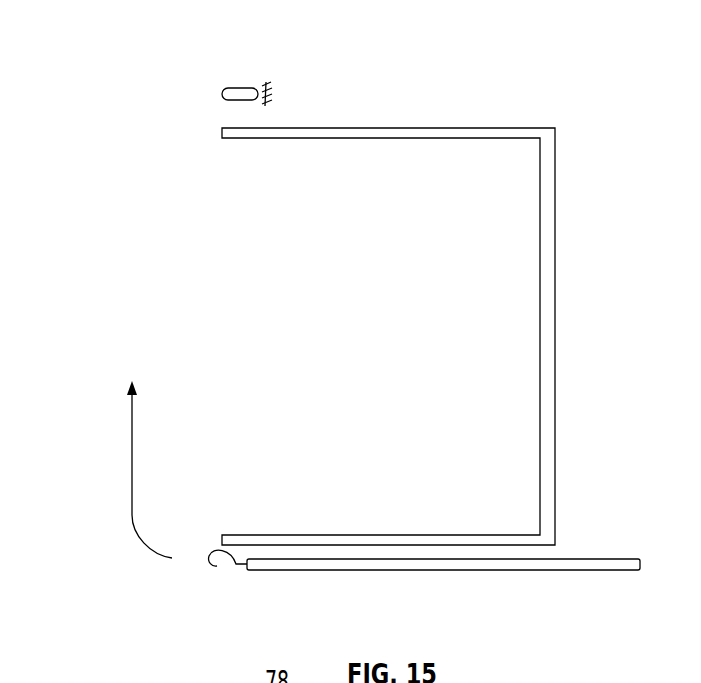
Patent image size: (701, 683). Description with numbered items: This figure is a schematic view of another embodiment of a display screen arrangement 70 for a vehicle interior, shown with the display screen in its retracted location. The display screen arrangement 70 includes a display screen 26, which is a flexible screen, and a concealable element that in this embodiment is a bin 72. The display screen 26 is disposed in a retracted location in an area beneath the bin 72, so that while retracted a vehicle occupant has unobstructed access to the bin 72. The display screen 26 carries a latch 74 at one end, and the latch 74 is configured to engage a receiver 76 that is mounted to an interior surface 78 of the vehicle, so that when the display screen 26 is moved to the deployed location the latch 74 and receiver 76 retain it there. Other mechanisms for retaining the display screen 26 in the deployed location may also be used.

The display screen arrangement 70 is at (86, 46).
The bin 72 is at (522, 213).
The latch 74 is at (232, 567).
The receiver 76 is at (233, 89).
The interior surface 78 is at (264, 91).
The display screen 26 is at (470, 572).